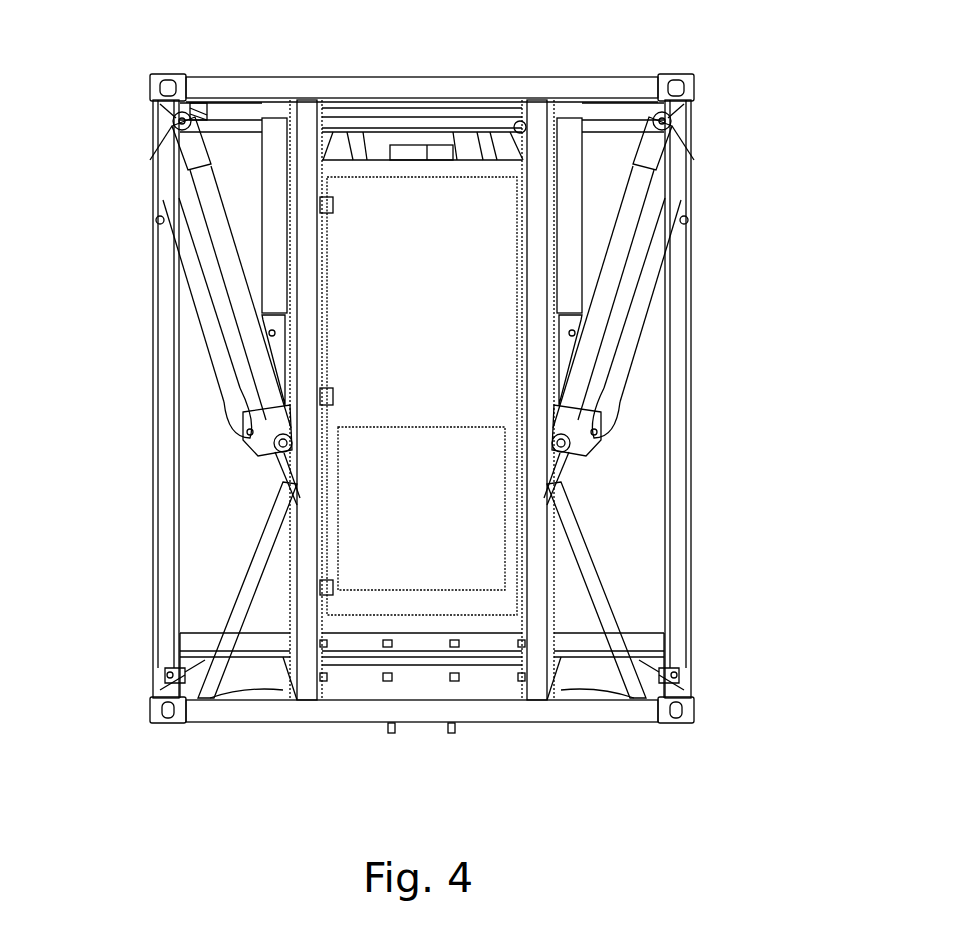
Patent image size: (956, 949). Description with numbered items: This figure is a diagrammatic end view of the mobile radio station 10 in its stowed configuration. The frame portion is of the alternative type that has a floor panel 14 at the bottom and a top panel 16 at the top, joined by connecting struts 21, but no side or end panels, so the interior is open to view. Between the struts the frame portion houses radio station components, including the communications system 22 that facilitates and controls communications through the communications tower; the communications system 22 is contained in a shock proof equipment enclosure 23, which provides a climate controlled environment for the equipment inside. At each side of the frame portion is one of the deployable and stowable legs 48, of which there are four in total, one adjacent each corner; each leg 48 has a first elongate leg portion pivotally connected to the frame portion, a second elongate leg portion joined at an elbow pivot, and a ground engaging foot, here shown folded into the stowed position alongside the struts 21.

The mobile radio station 10 is at (740, 110).
The floor panel 14 is at (527, 722).
The top panel 16 is at (502, 78).
The connecting struts 21 is at (307, 118).
The communications system 22 is at (505, 481).
The shock proof equipment enclosure 23 is at (424, 604).
The deployable and stowable legs 48 is at (138, 371).